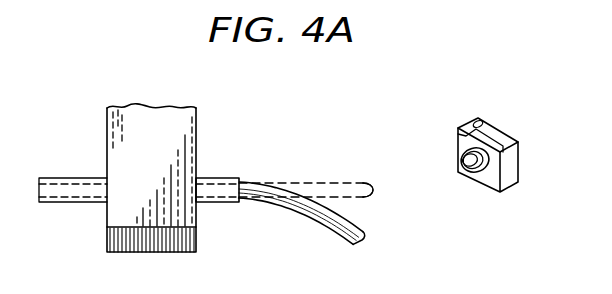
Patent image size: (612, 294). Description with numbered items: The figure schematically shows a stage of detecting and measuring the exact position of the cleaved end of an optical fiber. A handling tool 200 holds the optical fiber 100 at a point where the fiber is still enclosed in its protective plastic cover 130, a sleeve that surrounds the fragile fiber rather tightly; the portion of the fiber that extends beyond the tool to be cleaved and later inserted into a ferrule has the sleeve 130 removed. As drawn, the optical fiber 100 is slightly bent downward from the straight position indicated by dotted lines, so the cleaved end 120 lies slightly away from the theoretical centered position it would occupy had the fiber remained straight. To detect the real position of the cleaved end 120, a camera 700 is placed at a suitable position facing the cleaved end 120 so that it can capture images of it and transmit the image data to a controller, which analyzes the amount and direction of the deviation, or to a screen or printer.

The handling tool 200 is at (133, 108).
The plastic cover 130 is at (72, 203).
The optical fiber 100 is at (301, 219).
The cleaved end 120 is at (390, 253).
The camera 700 is at (498, 137).